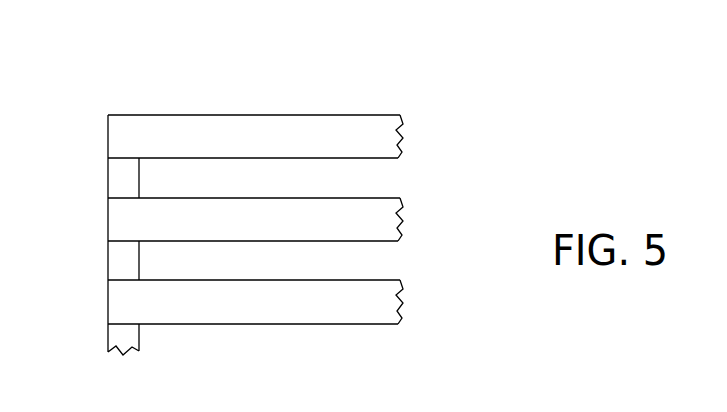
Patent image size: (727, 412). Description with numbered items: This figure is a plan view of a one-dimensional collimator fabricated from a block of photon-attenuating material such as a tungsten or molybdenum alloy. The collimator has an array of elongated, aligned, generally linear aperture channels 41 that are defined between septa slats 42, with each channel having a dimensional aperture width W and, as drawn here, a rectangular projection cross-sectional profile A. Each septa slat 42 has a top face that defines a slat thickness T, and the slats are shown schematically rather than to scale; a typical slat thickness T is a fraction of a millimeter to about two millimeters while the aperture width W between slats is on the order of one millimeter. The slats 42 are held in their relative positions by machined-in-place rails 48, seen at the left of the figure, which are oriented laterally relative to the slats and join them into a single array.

The aperture channel 41 is at (238, 158).
The septa slat 42 is at (404, 126).
The rail 48 is at (117, 256).
The projection cross-sectional profile A is at (412, 160).
The aperture width W is at (81, 158).
The slat thickness T is at (213, 247).